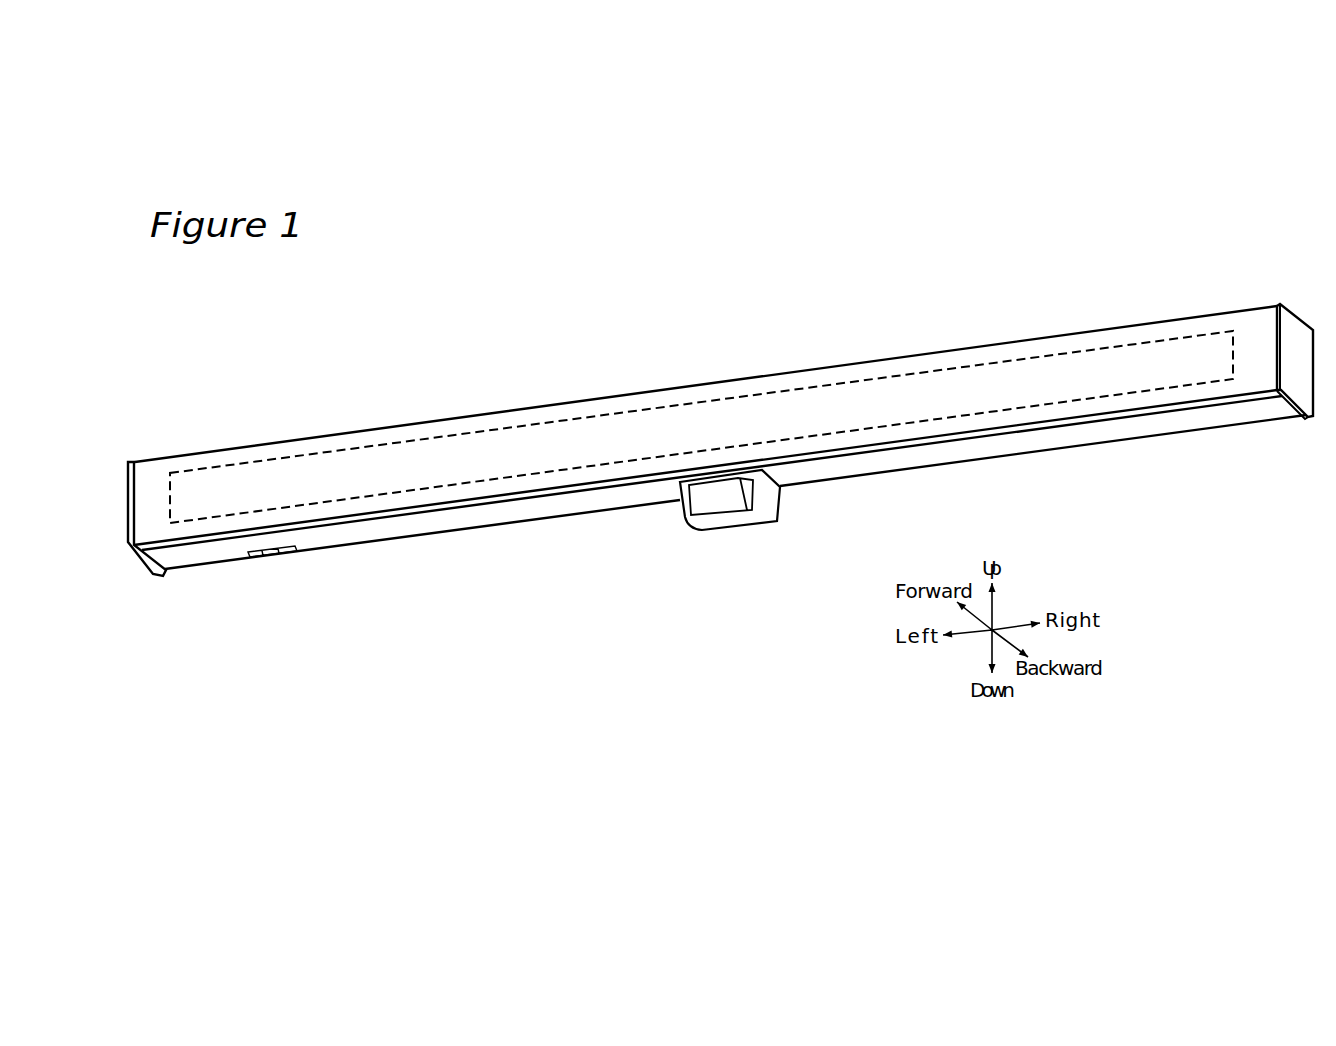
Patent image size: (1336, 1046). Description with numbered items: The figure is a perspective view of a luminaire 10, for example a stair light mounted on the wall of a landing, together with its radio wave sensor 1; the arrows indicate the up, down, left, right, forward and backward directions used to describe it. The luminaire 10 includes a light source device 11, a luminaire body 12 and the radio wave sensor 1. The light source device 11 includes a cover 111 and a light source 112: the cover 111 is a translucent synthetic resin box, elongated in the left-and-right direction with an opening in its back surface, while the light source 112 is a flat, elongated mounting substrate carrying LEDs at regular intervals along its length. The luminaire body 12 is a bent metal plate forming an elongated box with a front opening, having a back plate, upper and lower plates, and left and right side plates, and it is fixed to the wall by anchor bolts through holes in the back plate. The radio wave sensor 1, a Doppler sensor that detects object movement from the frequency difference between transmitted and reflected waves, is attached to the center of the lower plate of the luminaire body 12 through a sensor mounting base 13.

The radio wave sensor 1 is at (702, 502).
The luminaire 10 is at (720, 422).
The light source device 11 is at (720, 426).
The cover 111 is at (705, 411).
The light source 112 is at (1027, 352).
The luminaire body 12 is at (1123, 440).
The sensor mounting base 13 is at (715, 529).